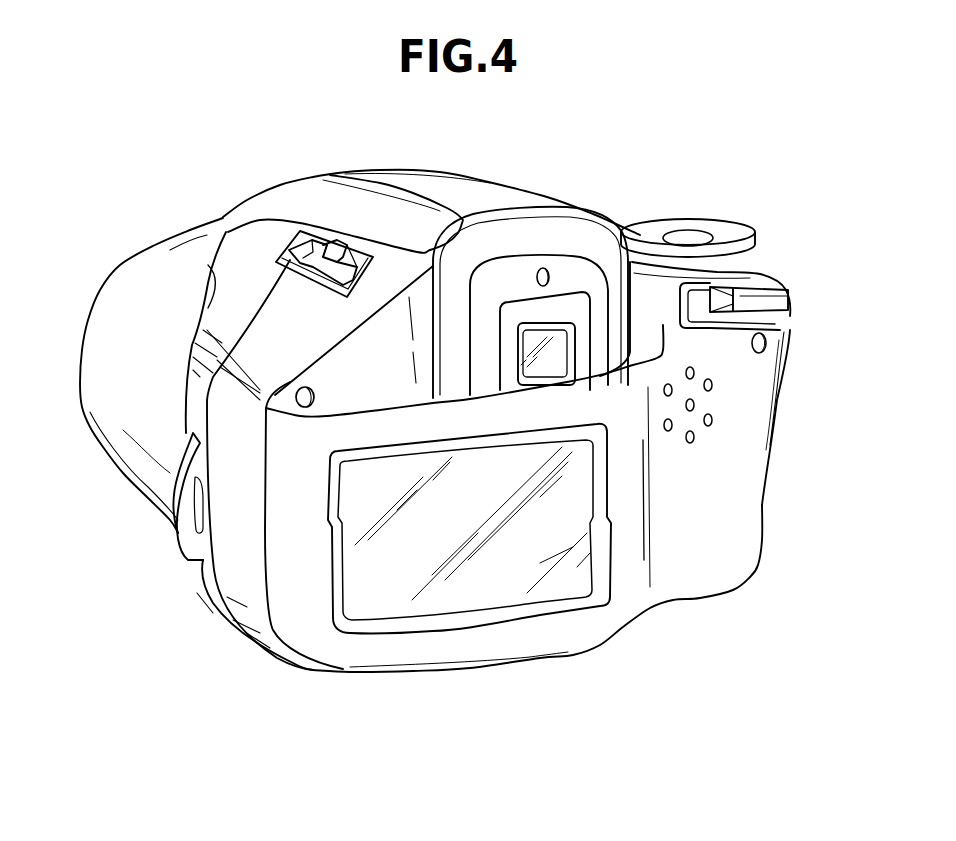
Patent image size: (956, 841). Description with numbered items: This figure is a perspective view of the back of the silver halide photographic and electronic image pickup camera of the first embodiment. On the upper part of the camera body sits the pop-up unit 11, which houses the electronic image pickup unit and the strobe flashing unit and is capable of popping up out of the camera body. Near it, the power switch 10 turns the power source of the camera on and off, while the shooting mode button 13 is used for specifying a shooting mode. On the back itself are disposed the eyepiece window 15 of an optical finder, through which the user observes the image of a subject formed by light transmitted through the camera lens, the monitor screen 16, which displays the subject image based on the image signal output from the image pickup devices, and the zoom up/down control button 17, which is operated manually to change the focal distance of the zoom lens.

The power switch 10 is at (289, 250).
The pop-up unit 11 is at (303, 173).
The shooting mode button 13 is at (715, 231).
The eyepiece window 15 is at (557, 363).
The monitor screen 16 is at (343, 622).
The zoom up/down control button 17 is at (790, 298).